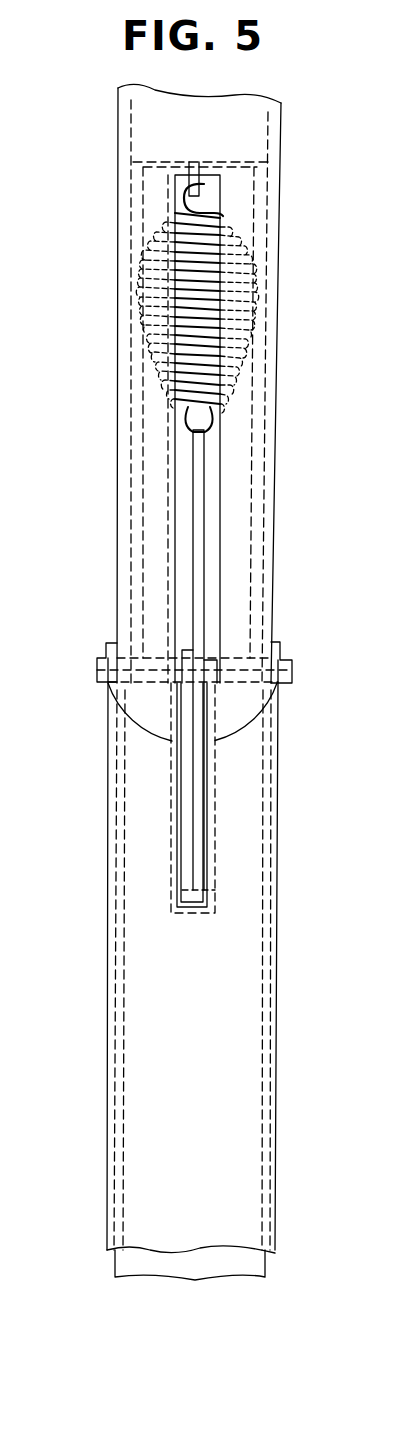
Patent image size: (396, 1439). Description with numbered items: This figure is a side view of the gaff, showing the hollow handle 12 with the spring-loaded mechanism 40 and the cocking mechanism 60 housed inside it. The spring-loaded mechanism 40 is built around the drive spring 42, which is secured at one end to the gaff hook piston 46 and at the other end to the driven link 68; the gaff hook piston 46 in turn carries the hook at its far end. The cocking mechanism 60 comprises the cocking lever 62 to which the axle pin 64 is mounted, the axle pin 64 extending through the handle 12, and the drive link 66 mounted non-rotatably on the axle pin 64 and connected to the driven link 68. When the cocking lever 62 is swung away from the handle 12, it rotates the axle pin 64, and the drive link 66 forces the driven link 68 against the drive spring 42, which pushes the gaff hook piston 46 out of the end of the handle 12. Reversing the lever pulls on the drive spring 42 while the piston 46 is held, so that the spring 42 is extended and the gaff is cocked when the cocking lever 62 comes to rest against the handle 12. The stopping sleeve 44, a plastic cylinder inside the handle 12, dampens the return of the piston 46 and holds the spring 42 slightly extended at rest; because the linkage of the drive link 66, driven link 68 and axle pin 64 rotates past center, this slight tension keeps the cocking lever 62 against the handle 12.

The hollow handle 12 is at (117, 367).
The spring-loaded mechanism 40 is at (255, 284).
The drive spring 42 is at (140, 262).
The stopping sleeve 44 is at (157, 438).
The gaff hook piston 46 is at (158, 119).
The cocking mechanism 60 is at (280, 660).
The cocking lever 62 is at (150, 962).
The axle pin 64 is at (97, 668).
The drive link 66 is at (186, 707).
The driven link 68 is at (195, 546).